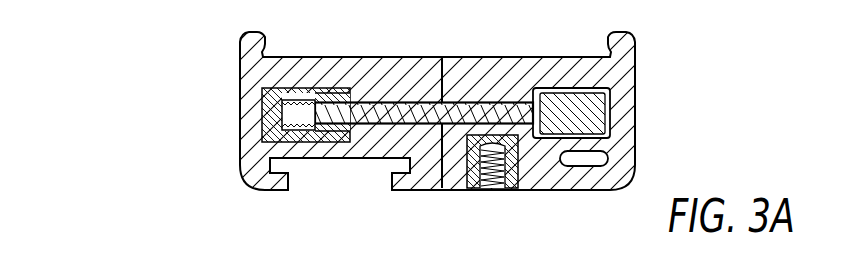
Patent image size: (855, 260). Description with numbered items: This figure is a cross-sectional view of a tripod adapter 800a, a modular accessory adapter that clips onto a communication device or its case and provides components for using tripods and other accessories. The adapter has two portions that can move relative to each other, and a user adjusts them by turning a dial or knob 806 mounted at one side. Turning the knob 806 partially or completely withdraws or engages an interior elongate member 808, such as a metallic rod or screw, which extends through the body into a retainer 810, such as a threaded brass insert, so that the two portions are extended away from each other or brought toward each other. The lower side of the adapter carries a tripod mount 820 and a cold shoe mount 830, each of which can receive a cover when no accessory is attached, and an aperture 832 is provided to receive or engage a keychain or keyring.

The tripod adapter 800a is at (190, 48).
The dial or knob 806 is at (612, 101).
The interior elongate member 808 is at (340, 128).
The retainer 810 is at (262, 108).
The tripod mount 820 is at (488, 180).
The cold shoe mount 830 is at (283, 168).
The aperture 832 is at (580, 161).